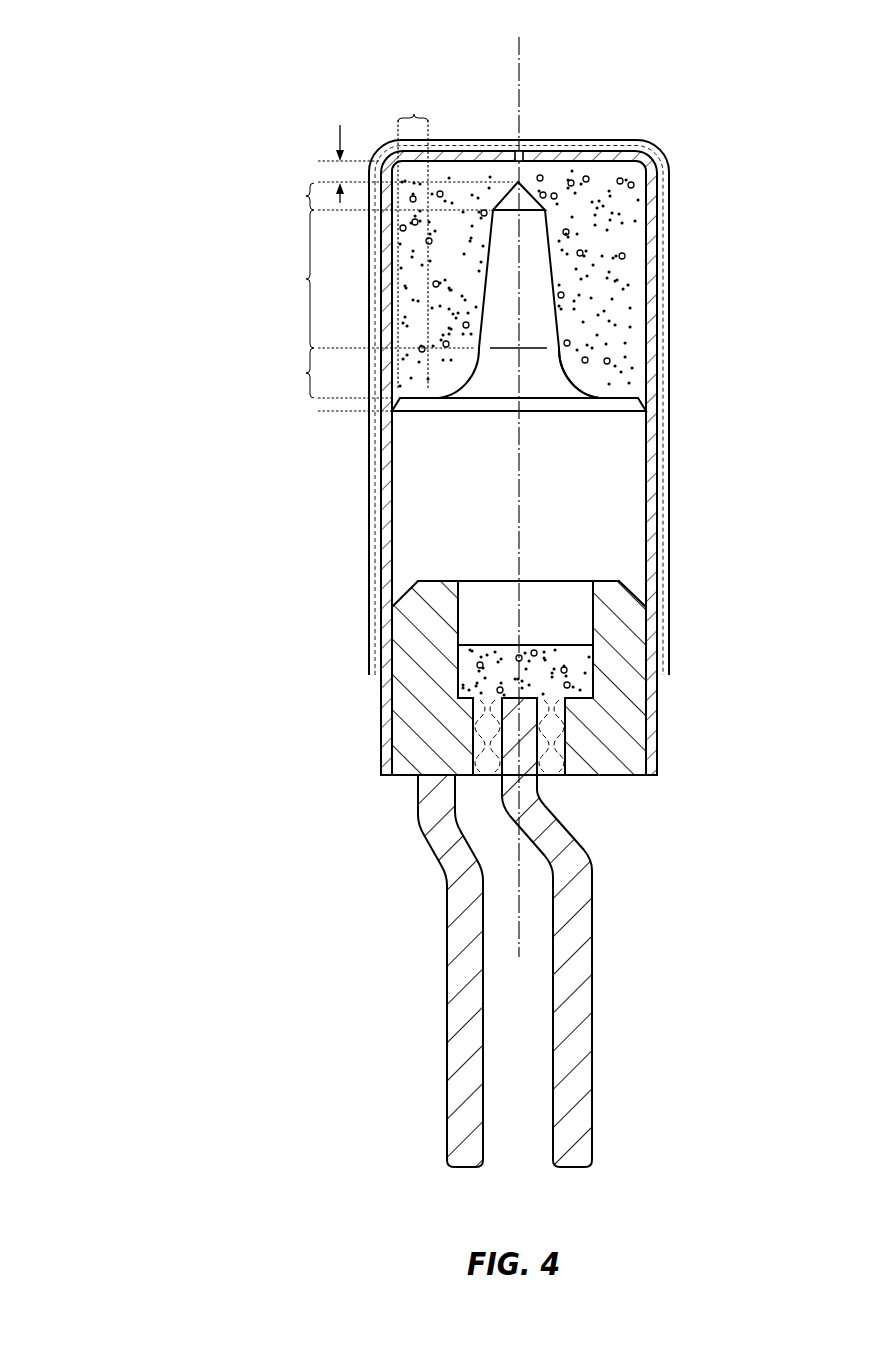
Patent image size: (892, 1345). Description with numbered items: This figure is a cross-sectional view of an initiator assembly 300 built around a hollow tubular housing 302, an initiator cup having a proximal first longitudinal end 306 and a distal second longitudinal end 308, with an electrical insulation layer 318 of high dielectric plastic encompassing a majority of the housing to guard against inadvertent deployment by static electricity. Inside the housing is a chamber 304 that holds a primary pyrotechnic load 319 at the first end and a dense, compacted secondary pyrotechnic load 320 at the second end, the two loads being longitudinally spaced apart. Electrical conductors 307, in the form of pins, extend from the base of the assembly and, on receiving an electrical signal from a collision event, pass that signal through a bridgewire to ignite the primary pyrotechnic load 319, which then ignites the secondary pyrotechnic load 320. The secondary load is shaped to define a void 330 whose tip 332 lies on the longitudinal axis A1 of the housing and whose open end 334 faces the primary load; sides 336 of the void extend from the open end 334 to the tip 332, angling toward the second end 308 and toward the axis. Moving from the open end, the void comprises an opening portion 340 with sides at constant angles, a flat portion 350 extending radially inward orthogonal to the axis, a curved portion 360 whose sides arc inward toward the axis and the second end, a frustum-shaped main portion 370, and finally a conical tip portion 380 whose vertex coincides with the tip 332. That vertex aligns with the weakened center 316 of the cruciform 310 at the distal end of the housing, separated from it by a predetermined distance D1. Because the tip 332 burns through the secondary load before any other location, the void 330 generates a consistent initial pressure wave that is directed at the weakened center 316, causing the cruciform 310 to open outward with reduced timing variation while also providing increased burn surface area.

The initiator assembly 300 is at (158, 305).
The tubular housing 302 is at (657, 688).
The chamber 304 is at (407, 451).
The first longitudinal end 306 is at (674, 733).
The electrical conductors 307 is at (463, 978).
The second longitudinal end 308 is at (622, 138).
The cruciform 310 is at (492, 110).
The weakened center 316 is at (518, 182).
The electrical insulation layer 318 is at (668, 367).
The primary pyrotechnic load 319 is at (560, 663).
The secondary pyrotechnic load 320 is at (610, 290).
The void 330 is at (595, 407).
The tip 332 is at (522, 178).
The open end 334 is at (428, 413).
The sides 336 is at (552, 317).
The opening portion 340 is at (314, 398).
The flat portion 350 is at (414, 240).
The curved portion 360 is at (327, 379).
The main portion 370 is at (369, 279).
The tip portion 380 is at (376, 196).
The longitudinal axis A1 is at (519, 483).
The distance D1 is at (415, 150).